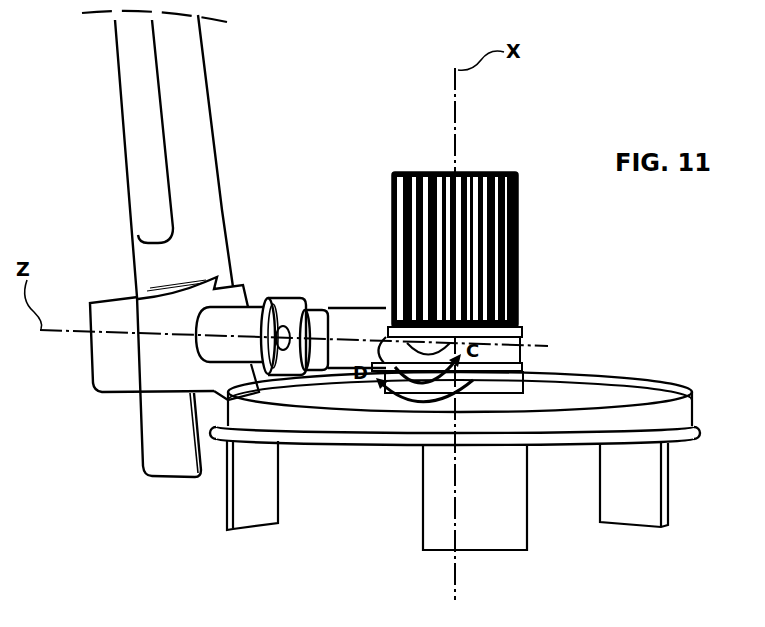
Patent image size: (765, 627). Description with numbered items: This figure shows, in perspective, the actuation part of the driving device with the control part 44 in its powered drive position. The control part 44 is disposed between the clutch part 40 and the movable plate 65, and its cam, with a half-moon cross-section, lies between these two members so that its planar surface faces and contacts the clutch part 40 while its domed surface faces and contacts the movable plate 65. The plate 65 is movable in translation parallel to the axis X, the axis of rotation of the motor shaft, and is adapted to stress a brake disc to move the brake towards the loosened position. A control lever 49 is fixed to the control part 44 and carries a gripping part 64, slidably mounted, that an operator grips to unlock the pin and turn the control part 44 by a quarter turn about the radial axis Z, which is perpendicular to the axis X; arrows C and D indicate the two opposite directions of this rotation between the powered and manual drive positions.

The clutch part 40 is at (498, 242).
The control part 44 is at (240, 372).
The control lever 49 is at (139, 140).
The gripping part 64 is at (197, 103).
The plate 65 is at (670, 413).